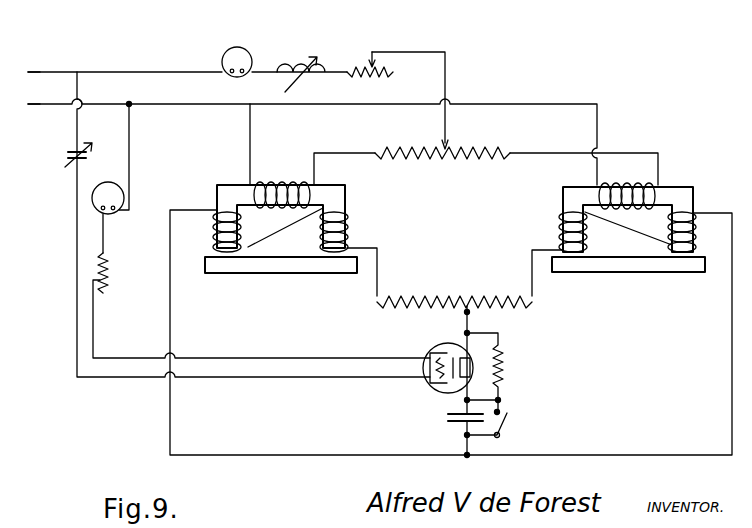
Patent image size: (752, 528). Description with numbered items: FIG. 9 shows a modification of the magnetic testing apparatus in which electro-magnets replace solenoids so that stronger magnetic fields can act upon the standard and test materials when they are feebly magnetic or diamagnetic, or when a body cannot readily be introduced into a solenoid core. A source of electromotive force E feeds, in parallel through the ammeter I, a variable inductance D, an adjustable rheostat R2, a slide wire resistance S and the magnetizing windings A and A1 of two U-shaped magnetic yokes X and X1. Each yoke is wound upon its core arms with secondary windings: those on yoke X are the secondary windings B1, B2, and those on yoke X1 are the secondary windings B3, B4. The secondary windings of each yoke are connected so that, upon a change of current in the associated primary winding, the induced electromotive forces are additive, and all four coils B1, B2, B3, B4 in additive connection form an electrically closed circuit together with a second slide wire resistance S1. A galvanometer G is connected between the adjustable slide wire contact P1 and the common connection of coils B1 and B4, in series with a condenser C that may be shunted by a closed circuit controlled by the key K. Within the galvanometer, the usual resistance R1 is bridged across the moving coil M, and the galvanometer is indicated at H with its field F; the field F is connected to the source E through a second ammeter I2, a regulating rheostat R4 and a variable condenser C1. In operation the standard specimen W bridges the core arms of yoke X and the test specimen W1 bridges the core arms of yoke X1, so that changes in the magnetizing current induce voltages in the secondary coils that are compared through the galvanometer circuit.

The source of electromotive force E is at (39, 88).
The ammeter I is at (250, 52).
The variable inductance D is at (312, 63).
The adjustable rheostat R2 is at (349, 66).
The slide wire resistance S is at (442, 165).
The magnetizing winding A is at (270, 187).
The magnetic yoke X is at (338, 193).
The secondary winding B1 is at (214, 224).
The secondary winding B2 is at (350, 225).
The standard specimen W is at (232, 276).
The magnetizing winding A1 is at (617, 186).
The magnetic yoke X1 is at (676, 187).
The secondary winding B3 is at (567, 222).
The secondary winding B4 is at (696, 208).
The test specimen W1 is at (606, 276).
The slide wire resistance S1 is at (428, 298).
The adjustable slide wire contact P1 is at (464, 313).
The vacuum tube H is at (437, 381).
The field of the galvanometer F is at (430, 370).
The galvanometer G is at (470, 358).
The moving coil M is at (471, 369).
The resistance R1 is at (505, 384).
The key K is at (510, 420).
The condenser C is at (447, 419).
The variable condenser C1 is at (72, 151).
The ammeter I2 is at (116, 189).
The regulating rheostat R4 is at (110, 273).